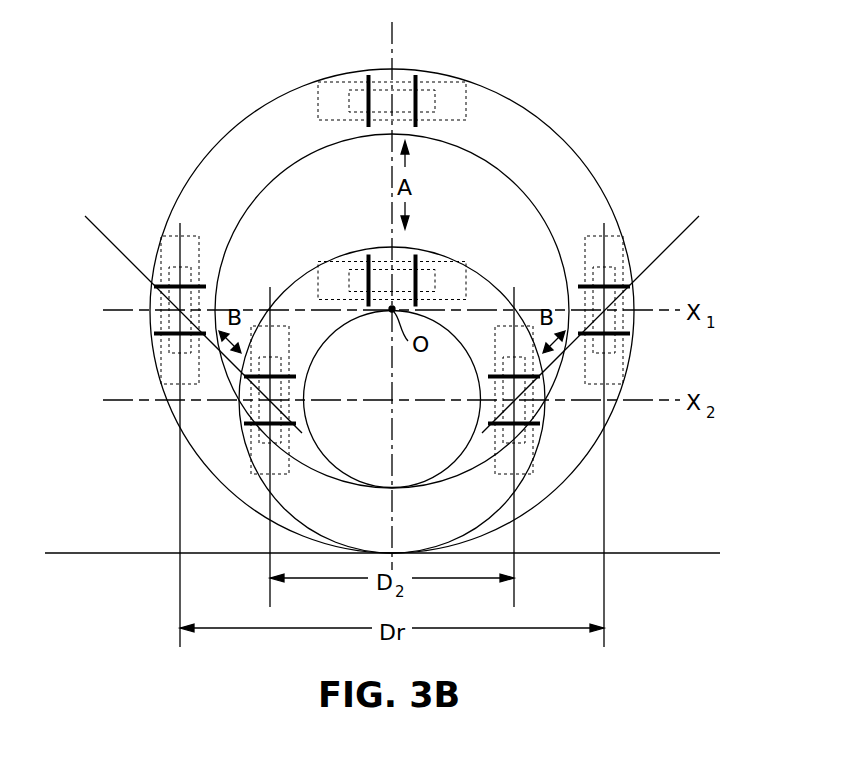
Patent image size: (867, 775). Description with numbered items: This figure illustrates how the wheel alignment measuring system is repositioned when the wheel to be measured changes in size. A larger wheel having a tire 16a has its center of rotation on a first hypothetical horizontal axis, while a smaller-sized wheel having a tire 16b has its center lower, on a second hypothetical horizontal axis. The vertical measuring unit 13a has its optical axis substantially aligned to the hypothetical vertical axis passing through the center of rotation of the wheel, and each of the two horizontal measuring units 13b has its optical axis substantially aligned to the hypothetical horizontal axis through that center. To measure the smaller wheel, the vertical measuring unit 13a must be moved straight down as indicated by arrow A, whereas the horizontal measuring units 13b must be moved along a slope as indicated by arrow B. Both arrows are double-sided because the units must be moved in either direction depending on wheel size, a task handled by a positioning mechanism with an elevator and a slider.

The vertical measuring unit 13a is at (418, 103).
The horizontal measuring units 13b is at (627, 256).
The tire 16a is at (574, 177).
The tire 16b is at (490, 293).